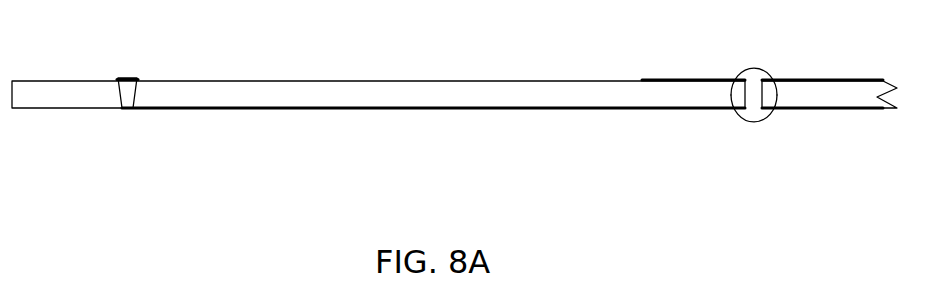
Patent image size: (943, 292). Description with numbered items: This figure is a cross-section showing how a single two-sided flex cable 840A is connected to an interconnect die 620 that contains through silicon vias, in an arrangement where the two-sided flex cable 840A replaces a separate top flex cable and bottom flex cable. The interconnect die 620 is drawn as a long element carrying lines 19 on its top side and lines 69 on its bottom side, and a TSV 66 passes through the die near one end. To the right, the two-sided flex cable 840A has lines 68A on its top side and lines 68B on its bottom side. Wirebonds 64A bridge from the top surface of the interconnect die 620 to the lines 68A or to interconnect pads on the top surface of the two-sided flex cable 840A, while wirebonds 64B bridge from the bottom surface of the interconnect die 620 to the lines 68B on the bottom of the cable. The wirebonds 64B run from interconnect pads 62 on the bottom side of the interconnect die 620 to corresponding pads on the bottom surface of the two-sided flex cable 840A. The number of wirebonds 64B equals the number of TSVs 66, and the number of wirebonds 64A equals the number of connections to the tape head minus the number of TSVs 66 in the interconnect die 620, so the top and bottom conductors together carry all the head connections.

The interconnect die 620 is at (477, 95).
The TSVs 66 is at (124, 78).
The lines 69 is at (273, 110).
The lines 19 is at (662, 78).
The interconnect pads 62 is at (725, 111).
The wirebonds 64A is at (753, 68).
The wirebonds 64B is at (754, 122).
The two-sided flex cable 840A is at (897, 95).
The lines 68A is at (818, 78).
The lines 68B is at (850, 111).